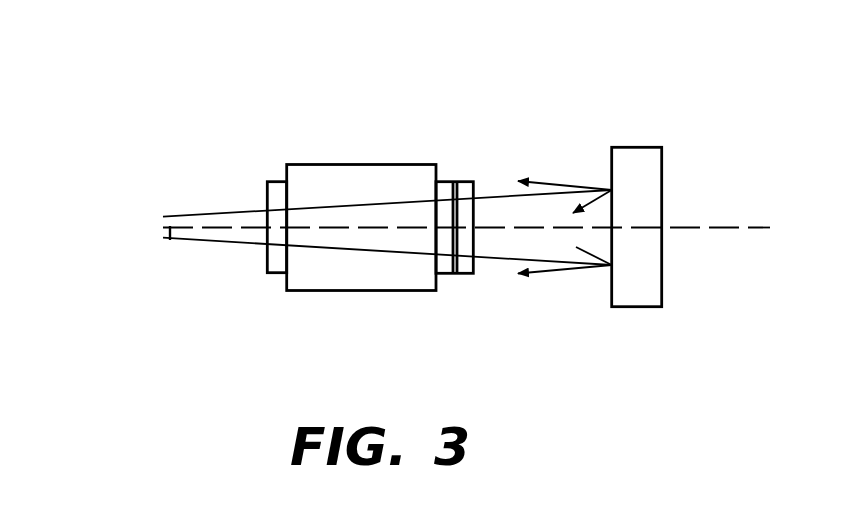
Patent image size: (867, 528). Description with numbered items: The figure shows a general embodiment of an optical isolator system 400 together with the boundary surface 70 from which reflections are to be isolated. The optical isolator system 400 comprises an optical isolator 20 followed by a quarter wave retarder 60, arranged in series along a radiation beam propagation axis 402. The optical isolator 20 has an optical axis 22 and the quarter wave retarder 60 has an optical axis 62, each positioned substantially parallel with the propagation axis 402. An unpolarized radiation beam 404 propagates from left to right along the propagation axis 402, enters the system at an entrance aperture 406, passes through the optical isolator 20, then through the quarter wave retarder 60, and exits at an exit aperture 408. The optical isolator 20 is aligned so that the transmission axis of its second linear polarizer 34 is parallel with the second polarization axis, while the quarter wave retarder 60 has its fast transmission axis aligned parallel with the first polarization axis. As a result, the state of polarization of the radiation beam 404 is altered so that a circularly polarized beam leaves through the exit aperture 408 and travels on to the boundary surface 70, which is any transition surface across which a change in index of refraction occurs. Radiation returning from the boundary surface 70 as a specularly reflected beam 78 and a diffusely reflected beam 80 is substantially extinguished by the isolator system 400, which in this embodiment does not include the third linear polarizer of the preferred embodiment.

The optical isolator system 400 is at (265, 72).
The radiation beam propagation axis 402 is at (170, 238).
The unpolarized radiation beam 404 is at (230, 236).
The entrance aperture 406 is at (267, 192).
The optical isolator 20 is at (408, 293).
The optical axis 22 is at (350, 227).
The second linear polarizer 34 is at (445, 190).
The quarter wave retarder 60 is at (473, 264).
The optical axis 62 is at (466, 225).
The exit aperture 408 is at (473, 185).
The boundary surface 70 is at (610, 283).
The specularly reflected radiation beam 78 is at (545, 182).
The diffusely reflected radiation beam 80 is at (584, 251).